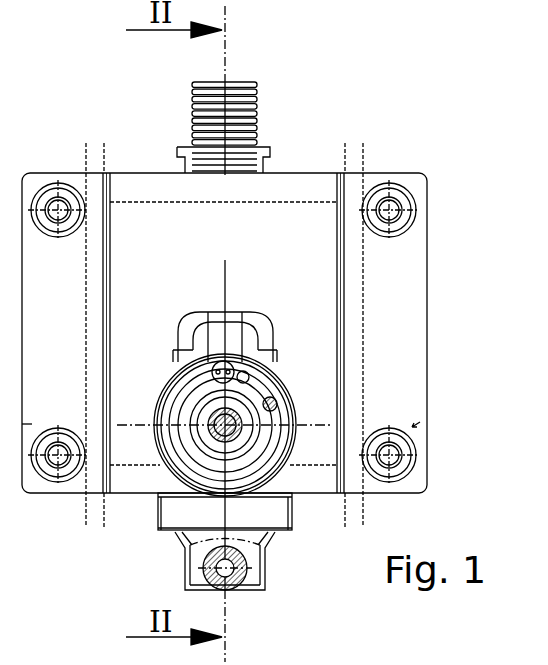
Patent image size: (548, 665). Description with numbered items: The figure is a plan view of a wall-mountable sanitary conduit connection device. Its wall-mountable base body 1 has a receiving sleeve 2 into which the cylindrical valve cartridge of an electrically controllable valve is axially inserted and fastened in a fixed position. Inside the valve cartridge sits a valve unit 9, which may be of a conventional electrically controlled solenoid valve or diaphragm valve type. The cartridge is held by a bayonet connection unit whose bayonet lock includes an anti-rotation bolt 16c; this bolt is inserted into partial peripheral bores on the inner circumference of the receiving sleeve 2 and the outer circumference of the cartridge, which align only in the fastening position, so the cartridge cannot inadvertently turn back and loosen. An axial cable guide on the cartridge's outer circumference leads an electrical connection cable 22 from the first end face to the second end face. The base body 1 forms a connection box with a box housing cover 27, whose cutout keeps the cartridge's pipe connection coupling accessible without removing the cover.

The base body 1 is at (353, 173).
The receiving sleeve 2 is at (268, 455).
The valve unit 9 is at (245, 427).
The anti-rotation bolt 16c is at (272, 403).
The electrical connection cable 22 is at (227, 355).
The box housing cover 27 is at (322, 275).